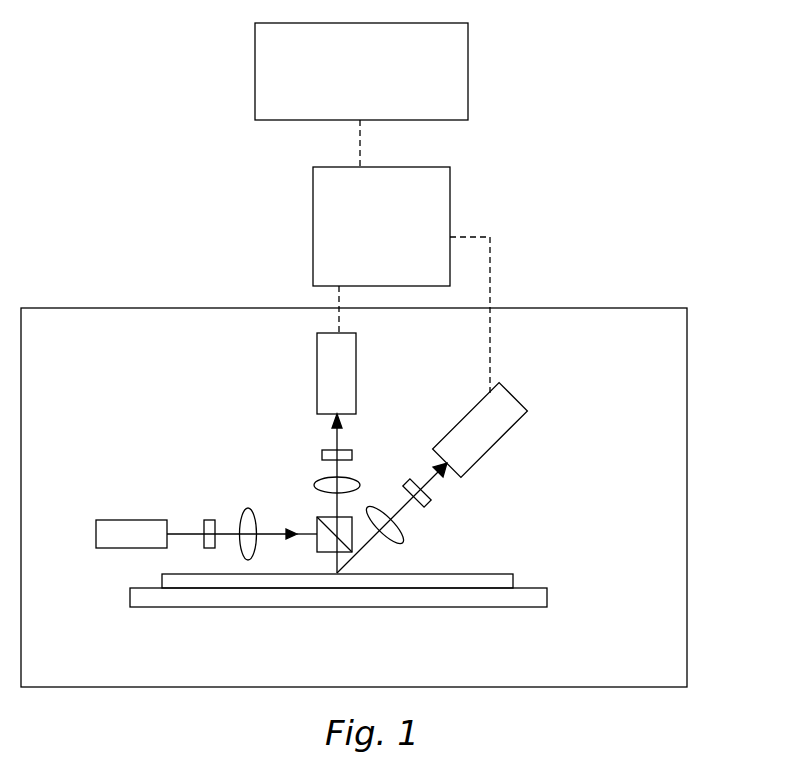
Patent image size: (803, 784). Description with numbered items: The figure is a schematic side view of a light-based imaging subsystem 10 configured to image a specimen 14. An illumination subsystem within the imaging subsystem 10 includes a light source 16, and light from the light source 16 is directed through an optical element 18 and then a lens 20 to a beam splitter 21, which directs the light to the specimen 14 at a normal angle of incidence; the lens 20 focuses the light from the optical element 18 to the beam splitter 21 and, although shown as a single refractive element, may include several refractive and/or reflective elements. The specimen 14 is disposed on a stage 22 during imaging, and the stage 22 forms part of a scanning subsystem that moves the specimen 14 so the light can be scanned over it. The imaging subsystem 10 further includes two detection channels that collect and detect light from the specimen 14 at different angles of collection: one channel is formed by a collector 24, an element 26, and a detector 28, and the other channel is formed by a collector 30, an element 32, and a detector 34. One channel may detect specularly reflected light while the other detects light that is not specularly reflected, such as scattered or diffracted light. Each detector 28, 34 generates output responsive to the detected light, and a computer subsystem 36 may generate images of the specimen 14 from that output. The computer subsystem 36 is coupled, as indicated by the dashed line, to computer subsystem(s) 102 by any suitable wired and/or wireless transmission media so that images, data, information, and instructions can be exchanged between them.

The imaging subsystem 10 is at (687, 327).
The specimen 14 is at (162, 574).
The light source 16 is at (107, 520).
The optical element 18 is at (212, 520).
The lens 20 is at (248, 508).
The beam splitter 21 is at (328, 517).
The stage 22 is at (130, 600).
The collector 24 is at (317, 482).
The element 26 is at (322, 450).
The detector 28 is at (317, 378).
The collector 30 is at (405, 545).
The element 32 is at (428, 502).
The detector 34 is at (512, 433).
The computer subsystem 36 is at (368, 255).
The computer subsystem(s) 102 is at (341, 101).